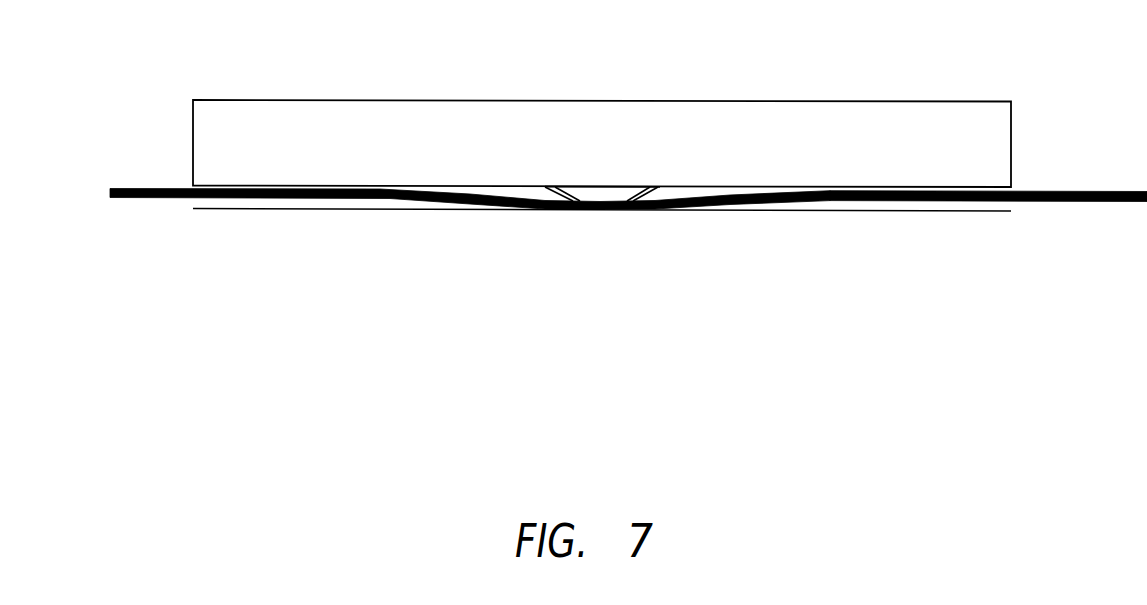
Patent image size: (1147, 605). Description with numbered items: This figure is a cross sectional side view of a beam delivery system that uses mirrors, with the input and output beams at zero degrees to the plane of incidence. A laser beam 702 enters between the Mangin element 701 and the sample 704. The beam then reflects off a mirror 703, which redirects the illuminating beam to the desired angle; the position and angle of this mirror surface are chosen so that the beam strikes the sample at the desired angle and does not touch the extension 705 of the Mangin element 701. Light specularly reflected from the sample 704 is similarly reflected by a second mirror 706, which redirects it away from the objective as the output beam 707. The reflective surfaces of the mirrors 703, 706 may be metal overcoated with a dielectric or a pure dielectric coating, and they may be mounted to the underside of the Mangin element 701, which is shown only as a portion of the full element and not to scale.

The Mangin element 701 is at (393, 100).
The laser beam 702 is at (135, 184).
The mirror 703 is at (533, 190).
The sample 704 is at (612, 208).
The extension of Mangin element 705 is at (603, 193).
The mirror 706 is at (665, 193).
The beam 707 is at (1040, 188).